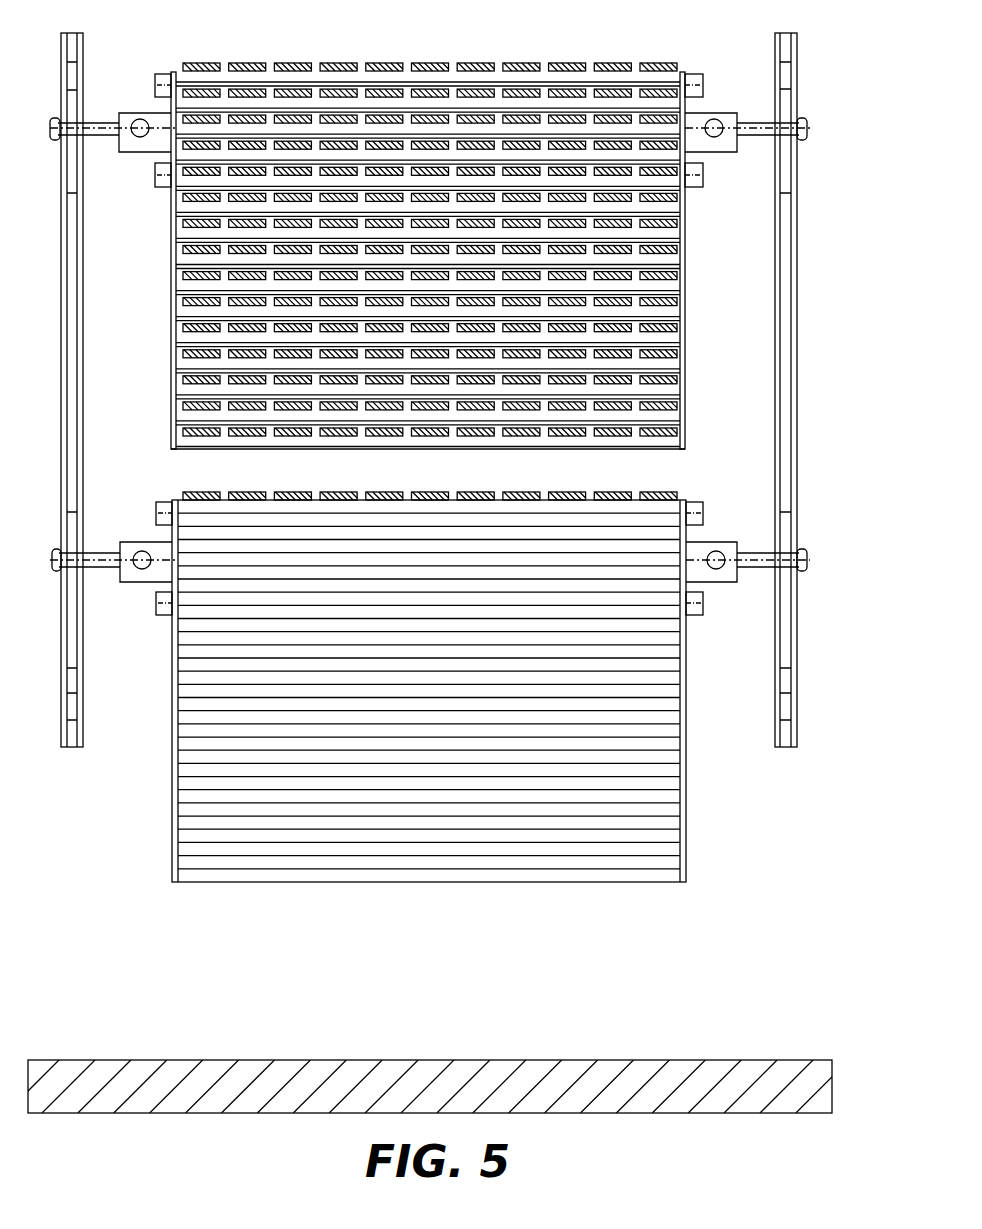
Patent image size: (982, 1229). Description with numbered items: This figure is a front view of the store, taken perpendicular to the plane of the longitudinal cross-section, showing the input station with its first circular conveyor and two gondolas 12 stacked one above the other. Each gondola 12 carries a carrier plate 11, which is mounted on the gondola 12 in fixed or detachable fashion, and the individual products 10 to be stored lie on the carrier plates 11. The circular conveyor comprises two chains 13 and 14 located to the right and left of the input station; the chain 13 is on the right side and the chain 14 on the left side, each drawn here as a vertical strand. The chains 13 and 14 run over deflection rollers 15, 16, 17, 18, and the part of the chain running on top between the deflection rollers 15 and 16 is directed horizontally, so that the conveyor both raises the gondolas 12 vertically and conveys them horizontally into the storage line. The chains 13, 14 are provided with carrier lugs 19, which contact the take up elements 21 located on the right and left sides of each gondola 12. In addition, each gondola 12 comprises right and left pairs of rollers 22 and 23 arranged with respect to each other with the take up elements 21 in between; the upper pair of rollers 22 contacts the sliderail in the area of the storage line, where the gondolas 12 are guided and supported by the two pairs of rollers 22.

The individual products 10 is at (185, 252).
The carrier plates 11 is at (198, 415).
The gondolas 12 is at (163, 314).
The chain 13 is at (786, 300).
The chain 14 is at (72, 388).
The deflection roller 15 is at (60, 113).
The deflection roller 16 is at (60, 62).
The deflection roller 17 is at (62, 722).
The deflection roller 18 is at (58, 590).
The carrier lugs 19 is at (105, 124).
The take up elements 21 is at (155, 118).
The upper pair of rollers 22 is at (163, 74).
The lower pair of rollers 23 is at (165, 187).